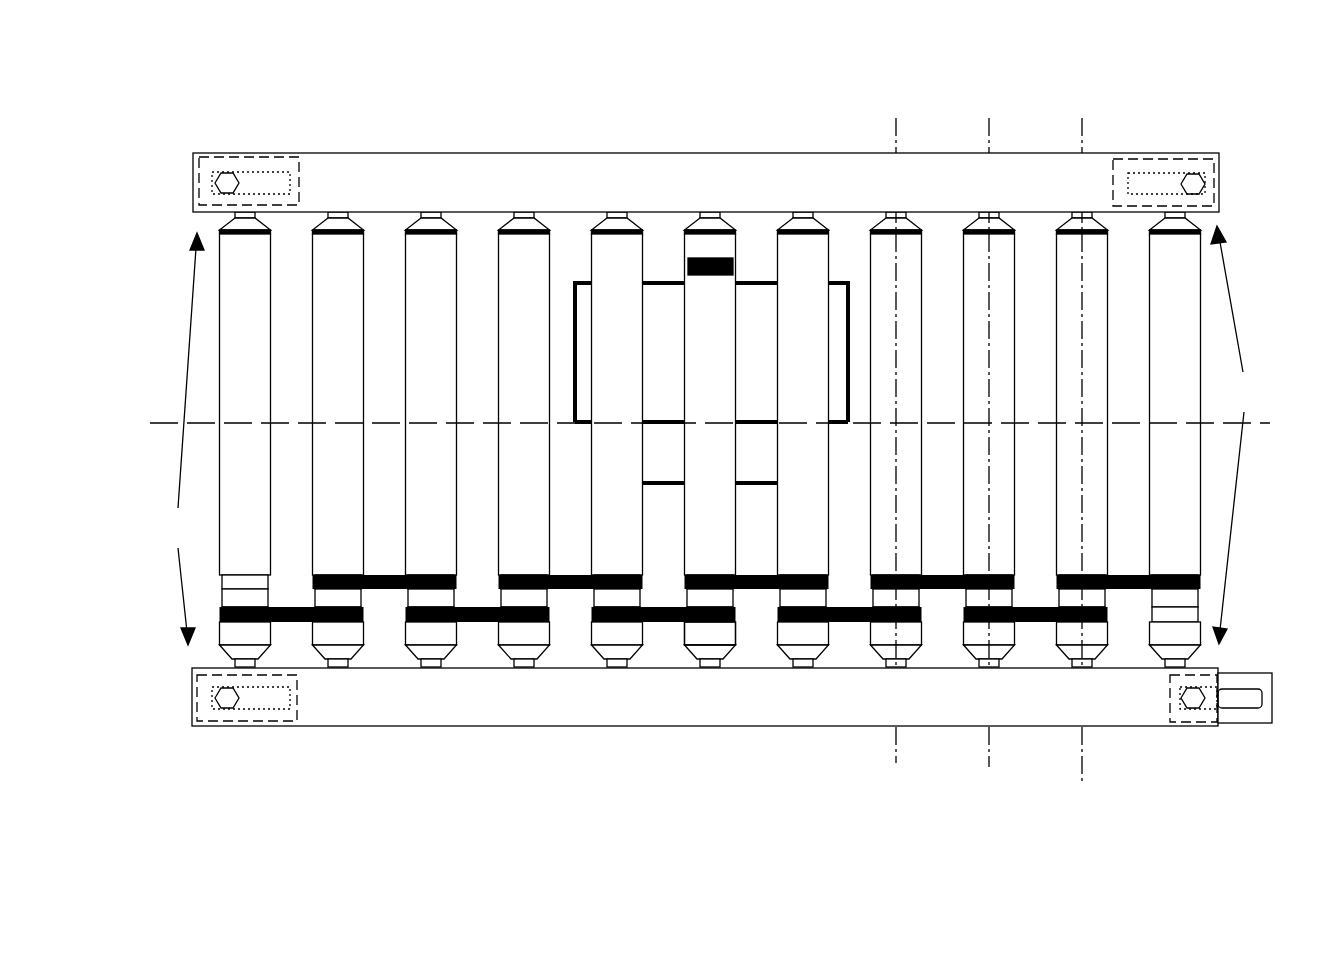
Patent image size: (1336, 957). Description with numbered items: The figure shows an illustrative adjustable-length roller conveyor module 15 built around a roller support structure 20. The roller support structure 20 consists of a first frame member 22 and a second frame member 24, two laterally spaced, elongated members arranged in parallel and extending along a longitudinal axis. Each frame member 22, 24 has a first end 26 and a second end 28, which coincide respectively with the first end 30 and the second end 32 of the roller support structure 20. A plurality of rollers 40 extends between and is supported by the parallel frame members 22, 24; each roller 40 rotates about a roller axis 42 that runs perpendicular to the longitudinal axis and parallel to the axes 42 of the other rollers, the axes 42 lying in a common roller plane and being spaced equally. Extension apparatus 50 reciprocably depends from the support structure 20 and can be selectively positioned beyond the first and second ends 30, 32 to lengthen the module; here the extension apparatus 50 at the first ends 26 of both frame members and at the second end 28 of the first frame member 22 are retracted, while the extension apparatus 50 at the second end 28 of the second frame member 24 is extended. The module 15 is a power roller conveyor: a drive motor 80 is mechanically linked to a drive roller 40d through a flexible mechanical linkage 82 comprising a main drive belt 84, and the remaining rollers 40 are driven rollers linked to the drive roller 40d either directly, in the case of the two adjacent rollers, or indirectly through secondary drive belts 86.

The adjustable roller conveyor module 15 is at (492, 103).
The roller support structure 20 is at (572, 178).
The first frame member 22 is at (362, 178).
The second frame member 24 is at (465, 715).
The first end 26 is at (184, 188).
The second end 28 is at (1215, 145).
The first end of the roller support structure 30 is at (180, 439).
The second end of the roller support structure 32 is at (1235, 435).
The rollers 40 is at (715, 638).
The drive roller 40d is at (705, 632).
The roller axis 42 is at (1082, 790).
The extension apparatus 50 is at (255, 165).
The drive motor 80 is at (757, 330).
The flexible mechanical linkage 82 is at (717, 166).
The main drive belt 84 is at (682, 263).
The secondary drive belts 86 is at (660, 622).